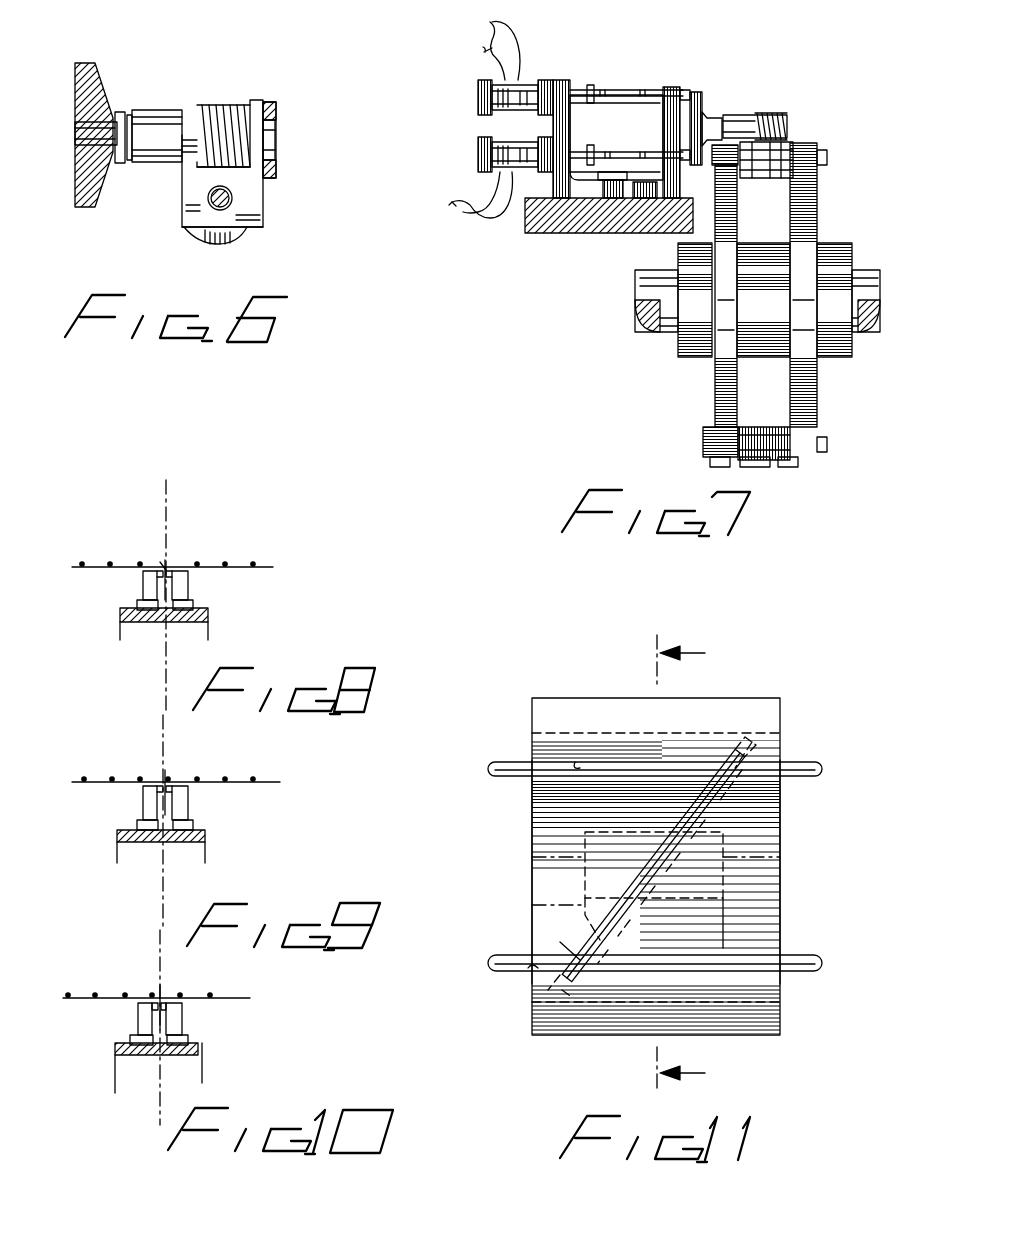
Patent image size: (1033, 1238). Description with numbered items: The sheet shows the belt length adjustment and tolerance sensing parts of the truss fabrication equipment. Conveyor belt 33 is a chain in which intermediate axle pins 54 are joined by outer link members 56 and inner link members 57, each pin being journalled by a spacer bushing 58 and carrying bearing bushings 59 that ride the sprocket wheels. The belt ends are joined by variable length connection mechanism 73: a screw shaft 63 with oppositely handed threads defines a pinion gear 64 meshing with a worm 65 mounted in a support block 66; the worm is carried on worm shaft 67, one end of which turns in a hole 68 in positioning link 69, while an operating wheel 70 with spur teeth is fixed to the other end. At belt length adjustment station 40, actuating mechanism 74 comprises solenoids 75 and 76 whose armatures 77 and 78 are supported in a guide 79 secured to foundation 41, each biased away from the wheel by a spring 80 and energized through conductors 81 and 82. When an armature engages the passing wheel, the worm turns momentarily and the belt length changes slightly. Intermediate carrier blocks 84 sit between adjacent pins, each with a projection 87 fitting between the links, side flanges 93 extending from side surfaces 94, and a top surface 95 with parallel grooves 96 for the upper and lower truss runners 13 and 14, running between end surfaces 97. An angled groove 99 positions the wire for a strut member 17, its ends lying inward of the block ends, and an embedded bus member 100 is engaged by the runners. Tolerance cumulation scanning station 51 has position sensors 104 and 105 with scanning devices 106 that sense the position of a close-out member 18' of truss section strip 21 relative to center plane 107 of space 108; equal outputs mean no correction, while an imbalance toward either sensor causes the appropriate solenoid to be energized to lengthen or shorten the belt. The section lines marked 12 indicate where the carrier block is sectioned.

In FIG. 11, the upper longitudinal elements 13 is at (792, 768).
In FIG. 11, the lower longitudinal elements 14 is at (797, 962).
In FIG. 8, the truss strut members 17 is at (226, 562).
In FIG. 9, the truss strut members 17 is at (228, 778).
In FIG. 10, the truss strut members 17 is at (183, 995).
In FIG. 11, the truss strut members 17 is at (575, 945).
In FIG. 8, the close-out member 18' is at (189, 557).
In FIG. 9, the close-out member 18' is at (185, 773).
In FIG. 10, the close-out member 18' is at (140, 980).
In FIG. 8, the truss section strip 21 is at (272, 558).
In FIG. 9, the truss section strip 21 is at (296, 758).
In FIG. 10, the truss section strip 21 is at (242, 989).
In FIG. 7, the conveyor belt 33 is at (852, 240).
In FIG. 7, the belt length adjustment station 40 is at (602, 47).
In FIG. 7, the foundation 41 is at (572, 225).
In FIG. 8, the foundation 41 is at (208, 612).
In FIG. 9, the foundation 41 is at (205, 836).
In FIG. 10, the foundation 41 is at (202, 1050).
In FIG. 8, the tolerance cumulation scanning station 51 is at (117, 492).
In FIG. 9, the tolerance cumulation scanning station 51 is at (108, 750).
In FIG. 10, the tolerance cumulation scanning station 51 is at (103, 960).
In FIG. 7, the intermediate axle pins 54 is at (828, 158).
In FIG. 7, the outer link members 56 is at (730, 467).
In FIG. 7, the inner link members 57 is at (768, 476).
In FIG. 7, the spacer bushing 58 is at (765, 425).
In FIG. 7, the bearing bushings 59 is at (815, 145).
In FIG. 6, the screw shaft 63 is at (263, 218).
In FIG. 6, the pinion gear 64 is at (232, 236).
In FIG. 6, the worm 65 is at (222, 112).
In FIG. 7, the worm 65 is at (770, 113).
In FIG. 6, the support block 66 is at (255, 192).
In FIG. 7, the support block 66 is at (735, 115).
In FIG. 6, the worm shaft 67 is at (75, 135).
In FIG. 6, the hole 68 is at (272, 158).
In FIG. 6, the positioning link 69 is at (276, 112).
In FIG. 6, the operating wheel 70 is at (80, 177).
In FIG. 7, the operating wheel 70 is at (707, 120).
In FIG. 7, the variable length connection mechanism 73 is at (808, 108).
In FIG. 7, the actuating mechanism 74 is at (688, 58).
In FIG. 7, the solenoid 75 is at (482, 101).
In FIG. 7, the solenoid 76 is at (482, 158).
In FIG. 7, the armature 77 is at (603, 88).
In FIG. 7, the armature 78 is at (600, 150).
In FIG. 7, the guide 79 is at (645, 215).
In FIG. 7, the spring 80 is at (625, 90).
In FIG. 7, the conductor 81 is at (490, 25).
In FIG. 7, the conductor 82 is at (490, 218).
In FIG. 11, the intermediate carrier blocks 84 is at (796, 865).
In FIG. 11, the projection 87 is at (586, 857).
In FIG. 11, the side flange 93 is at (780, 712).
In FIG. 11, the side surfaces 94 is at (700, 735).
In FIG. 11, the top surface 95 is at (782, 910).
In FIG. 11, the grooves 96 is at (580, 768).
In FIG. 11, the end surfaces 97 is at (532, 816).
In FIG. 11, the groove 99 is at (700, 802).
In FIG. 11, the bus member 100 is at (592, 922).
In FIG. 8, the position sensor 104 is at (188, 584).
In FIG. 9, the position sensor 104 is at (188, 800).
In FIG. 10, the position sensor 104 is at (182, 1020).
In FIG. 8, the position sensor 105 is at (143, 585).
In FIG. 9, the position sensor 105 is at (143, 800).
In FIG. 10, the position sensor 105 is at (138, 1020).
In FIG. 8, the scanning device 106 is at (157, 566).
In FIG. 9, the scanning device 106 is at (172, 785).
In FIG. 8, the center plane 107 is at (170, 496).
In FIG. 9, the center plane 107 is at (160, 732).
In FIG. 10, the center plane 107 is at (163, 972).
In FIG. 8, the space 108 is at (160, 560).
In FIG. 11, the section line 12 is at (692, 863).